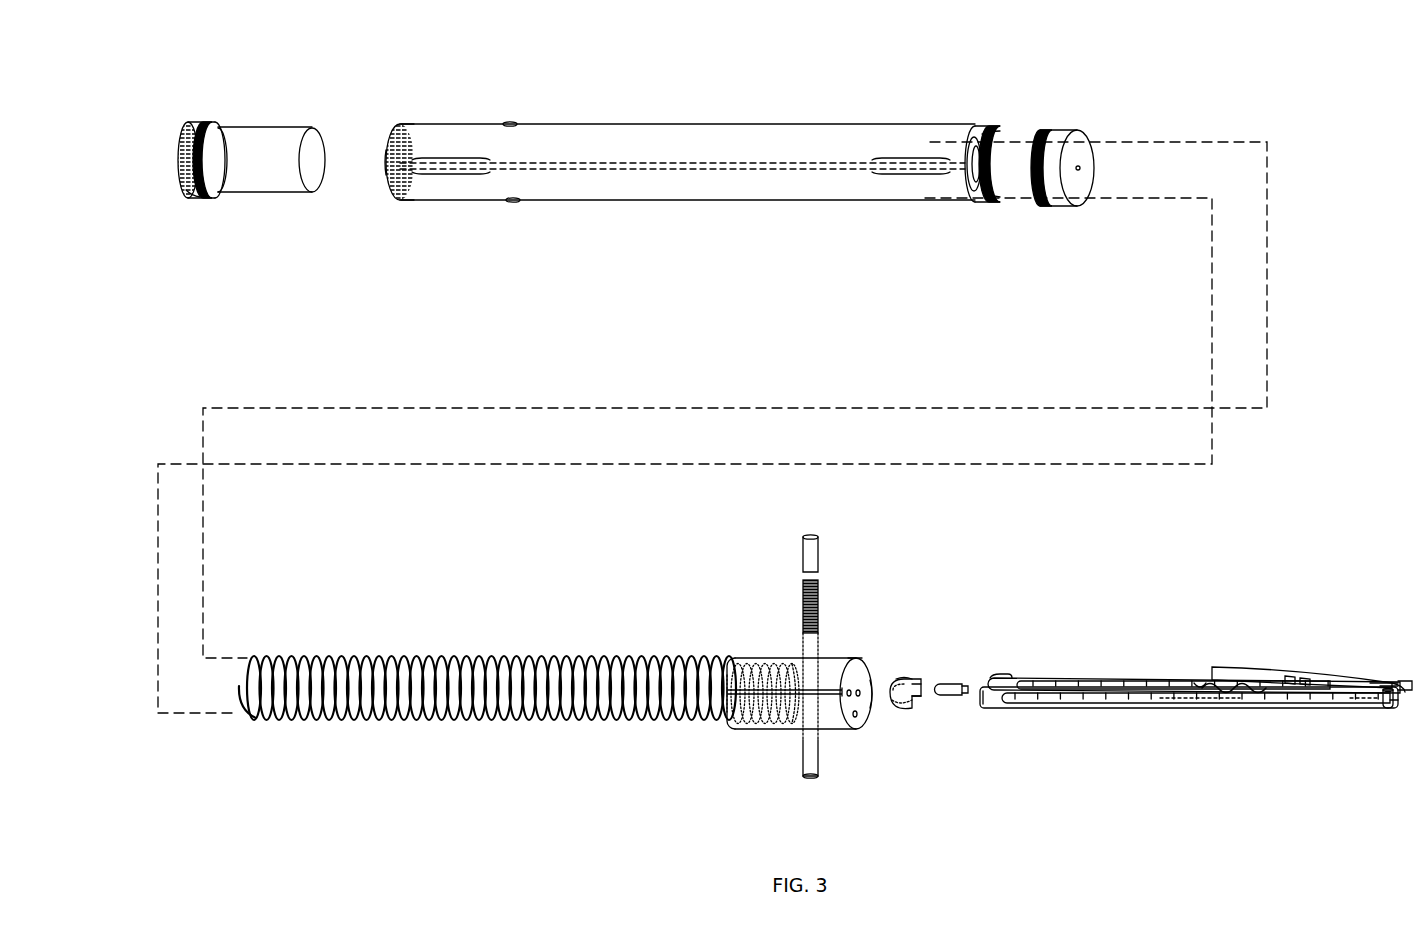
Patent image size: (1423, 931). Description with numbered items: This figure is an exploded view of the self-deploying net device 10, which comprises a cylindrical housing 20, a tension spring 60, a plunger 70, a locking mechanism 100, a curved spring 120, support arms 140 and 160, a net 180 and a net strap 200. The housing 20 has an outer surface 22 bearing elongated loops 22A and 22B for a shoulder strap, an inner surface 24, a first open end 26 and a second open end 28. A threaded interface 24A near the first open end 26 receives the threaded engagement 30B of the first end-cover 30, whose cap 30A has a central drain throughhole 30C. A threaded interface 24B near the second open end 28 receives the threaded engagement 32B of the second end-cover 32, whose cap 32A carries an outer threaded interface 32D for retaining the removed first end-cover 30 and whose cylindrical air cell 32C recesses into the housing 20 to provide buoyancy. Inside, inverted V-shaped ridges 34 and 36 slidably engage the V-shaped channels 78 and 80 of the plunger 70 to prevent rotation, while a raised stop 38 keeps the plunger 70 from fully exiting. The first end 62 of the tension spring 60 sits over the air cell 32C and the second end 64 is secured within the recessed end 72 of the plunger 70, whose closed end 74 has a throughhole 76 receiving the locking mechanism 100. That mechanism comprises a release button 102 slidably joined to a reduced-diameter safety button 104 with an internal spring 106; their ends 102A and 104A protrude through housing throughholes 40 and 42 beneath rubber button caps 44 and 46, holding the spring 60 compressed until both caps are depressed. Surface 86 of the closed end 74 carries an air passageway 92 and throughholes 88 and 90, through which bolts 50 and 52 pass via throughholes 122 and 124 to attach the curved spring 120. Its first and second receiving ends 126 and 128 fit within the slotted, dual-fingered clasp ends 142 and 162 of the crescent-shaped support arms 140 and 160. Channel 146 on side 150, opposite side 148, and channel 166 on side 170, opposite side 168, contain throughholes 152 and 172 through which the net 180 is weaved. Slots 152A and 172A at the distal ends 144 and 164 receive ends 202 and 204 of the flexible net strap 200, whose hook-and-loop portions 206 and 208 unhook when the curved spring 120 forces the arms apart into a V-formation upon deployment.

The device 10 is at (252, 737).
The housing 20 is at (650, 155).
The outer surface 22 is at (822, 140).
The loop 22A is at (445, 158).
The loop 22B is at (880, 178).
The inner surface 24 is at (998, 176).
The threaded interface 24A is at (985, 200).
The threaded interface 24B is at (397, 124).
The first open end 26 is at (996, 203).
The second open end 28 is at (383, 192).
The first end-cover 30 is at (1092, 162).
The cap 30A is at (1080, 142).
The threaded engagement 30B is at (1048, 130).
The drain throughhole 30C is at (1081, 168).
The second end-cover 32 is at (234, 147).
The cap 32A is at (190, 130).
The threaded engagement 32B is at (207, 128).
The air cell 32C is at (285, 140).
The threaded interface 32D is at (192, 183).
The inverted V-shaped ridge 34 is at (624, 172).
The inverted V-shaped ridge 36 is at (970, 165).
The raised stop 38 is at (975, 185).
The throughhole 40 is at (496, 96).
The throughhole 42 is at (483, 228).
The button cap 44 is at (513, 120).
The button cap 46 is at (513, 203).
The bolt 50 is at (952, 690).
The bolt 52 is at (966, 686).
The tension spring 60 is at (475, 695).
The first end 62 is at (248, 670).
The second end 64 is at (792, 676).
The plunger 70 is at (800, 707).
The recessed end 72 is at (727, 662).
The closed end 74 is at (832, 722).
The throughhole 76 is at (790, 678).
The V-shaped channel 78 is at (873, 697).
The V-shaped channel 80 is at (727, 690).
The surface 86 is at (866, 706).
The throughhole 88 is at (849, 689).
The throughhole 90 is at (858, 689).
The air passageway 92 is at (856, 718).
The locking mechanism 100 is at (819, 644).
The release button 102 is at (769, 532).
The end 102A is at (806, 535).
The safety button 104 is at (766, 768).
The end 104A is at (804, 777).
The spring 106 is at (803, 610).
The curved spring 120 is at (915, 643).
The throughhole 122 is at (892, 686).
The throughhole 124 is at (898, 680).
The first receiving end 126 is at (910, 700).
The second receiving end 128 is at (921, 686).
The support arm 140 is at (1190, 744).
The clasp end 142 is at (980, 709).
The distal end 144 is at (1366, 709).
The channel 146 is at (1090, 704).
The side 148 is at (1391, 710).
The side 150 is at (1150, 704).
The throughholes 152 is at (1222, 704).
The slot 152A is at (1360, 705).
The support arm 160 is at (1184, 644).
The clasp end 162 is at (997, 676).
The distal end 164 is at (1385, 690).
The channel 166 is at (1065, 681).
The side 168 is at (1390, 683).
The side 170 is at (1080, 682).
The throughholes 172 is at (1210, 688).
The slot 172A is at (1404, 682).
The net 180 is at (1200, 683).
The net strap 200 is at (1313, 631).
The end 202 is at (1385, 711).
The end 204 is at (1408, 682).
The first portion of hook-and-loop fastener 206 is at (1288, 676).
The second portion of hook-and-loop fastener 208 is at (1303, 679).